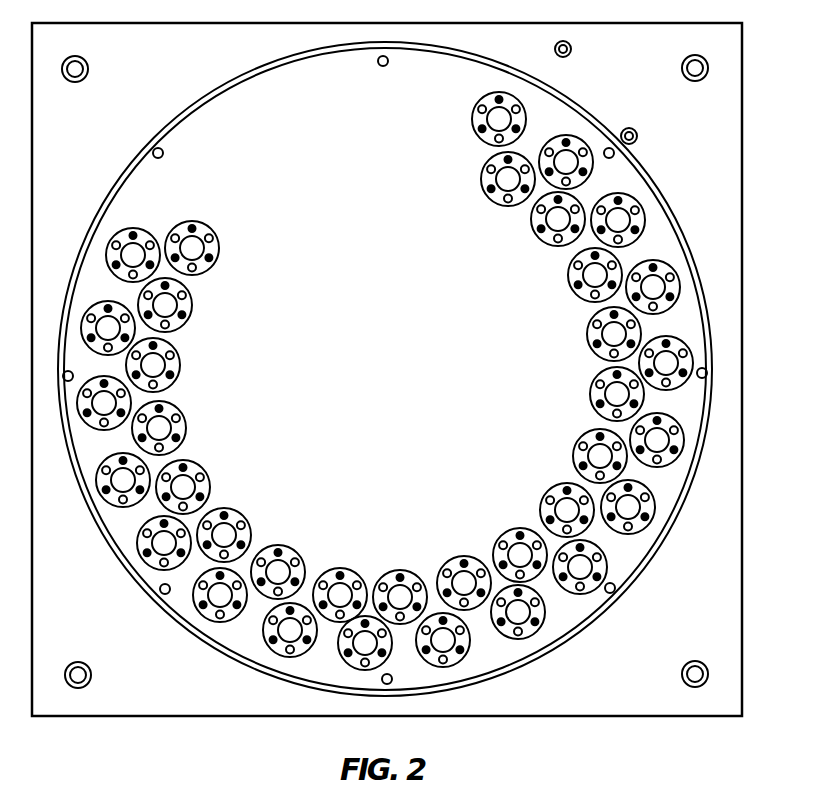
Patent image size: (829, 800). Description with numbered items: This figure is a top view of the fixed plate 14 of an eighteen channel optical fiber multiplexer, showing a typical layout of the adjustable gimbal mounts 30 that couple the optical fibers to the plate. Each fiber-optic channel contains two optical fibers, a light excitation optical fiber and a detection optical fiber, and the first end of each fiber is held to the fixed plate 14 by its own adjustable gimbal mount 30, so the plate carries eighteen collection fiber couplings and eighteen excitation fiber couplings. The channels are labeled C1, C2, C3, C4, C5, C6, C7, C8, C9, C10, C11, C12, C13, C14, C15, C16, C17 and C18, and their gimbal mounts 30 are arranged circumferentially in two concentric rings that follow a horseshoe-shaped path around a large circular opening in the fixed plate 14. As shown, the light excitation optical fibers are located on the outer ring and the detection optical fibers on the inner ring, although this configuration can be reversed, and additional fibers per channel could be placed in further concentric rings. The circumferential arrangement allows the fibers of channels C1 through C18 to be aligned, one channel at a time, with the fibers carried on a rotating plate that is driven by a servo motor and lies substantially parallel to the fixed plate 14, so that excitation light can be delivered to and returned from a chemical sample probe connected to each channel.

The fixed plate 14 is at (710, 177).
The adjustable gimbal mount 30 is at (743, 325).
The channel C1 is at (508, 189).
The channel C2 is at (554, 229).
The channel C3 is at (582, 281).
The channel C4 is at (599, 338).
The channel C5 is at (598, 394).
The channel C6 is at (578, 456).
The channel C7 is at (544, 510).
The channel C8 is at (500, 553).
The channel C9 is at (454, 575).
The channel C10 is at (398, 584).
The channel C11 is at (340, 578).
The channel C12 is at (278, 554).
The channel C13 is at (226, 517).
The channel C14 is at (193, 470).
The channel C15 is at (175, 416).
The channel C16 is at (177, 357).
The channel C17 is at (191, 302).
The channel C18 is at (219, 248).